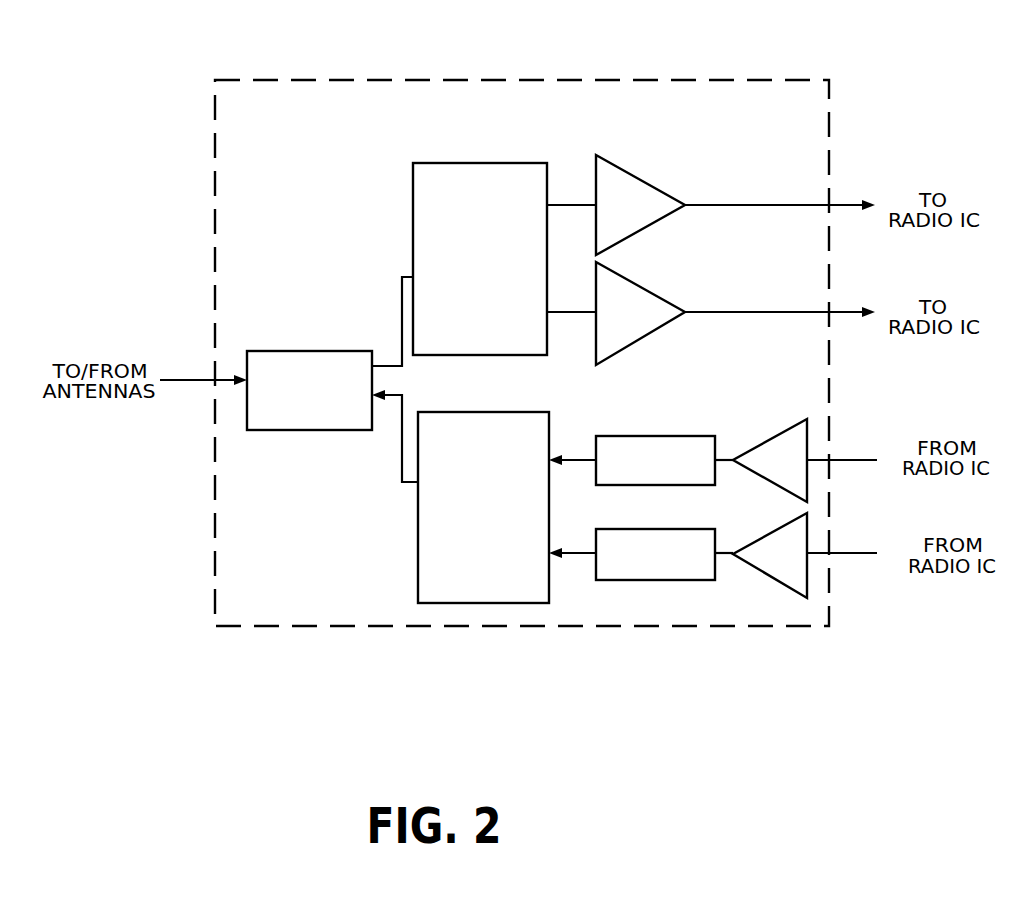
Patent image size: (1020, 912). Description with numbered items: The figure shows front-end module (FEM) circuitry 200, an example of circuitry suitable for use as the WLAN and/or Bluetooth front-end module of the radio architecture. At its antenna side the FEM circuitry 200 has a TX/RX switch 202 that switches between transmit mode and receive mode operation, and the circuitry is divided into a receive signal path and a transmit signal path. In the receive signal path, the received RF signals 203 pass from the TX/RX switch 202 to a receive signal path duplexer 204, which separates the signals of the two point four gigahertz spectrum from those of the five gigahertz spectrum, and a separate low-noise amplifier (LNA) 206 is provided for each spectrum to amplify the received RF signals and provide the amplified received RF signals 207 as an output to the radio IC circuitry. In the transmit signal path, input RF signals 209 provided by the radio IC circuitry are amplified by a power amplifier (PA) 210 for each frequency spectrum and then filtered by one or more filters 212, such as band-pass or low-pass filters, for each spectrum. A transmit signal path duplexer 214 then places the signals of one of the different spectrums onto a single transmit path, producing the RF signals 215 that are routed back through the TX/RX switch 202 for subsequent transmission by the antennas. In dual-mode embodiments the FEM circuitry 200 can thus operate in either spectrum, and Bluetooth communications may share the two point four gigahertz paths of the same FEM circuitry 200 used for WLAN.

The FEM circuitry 200 is at (668, 80).
The TX/RX switch 202 is at (276, 351).
The received RF signals 203 is at (402, 318).
The receive signal path duplexer 204 is at (470, 163).
The low-noise amplifier (LNA) 206 is at (626, 175).
The amplified received RF signals 207 is at (846, 205).
The input RF signals 209 is at (835, 460).
The power amplifier (PA) 210 is at (790, 430).
The filters 212 is at (629, 436).
The transmit signal path duplexer 214 is at (471, 412).
The RF signals 215 is at (402, 473).